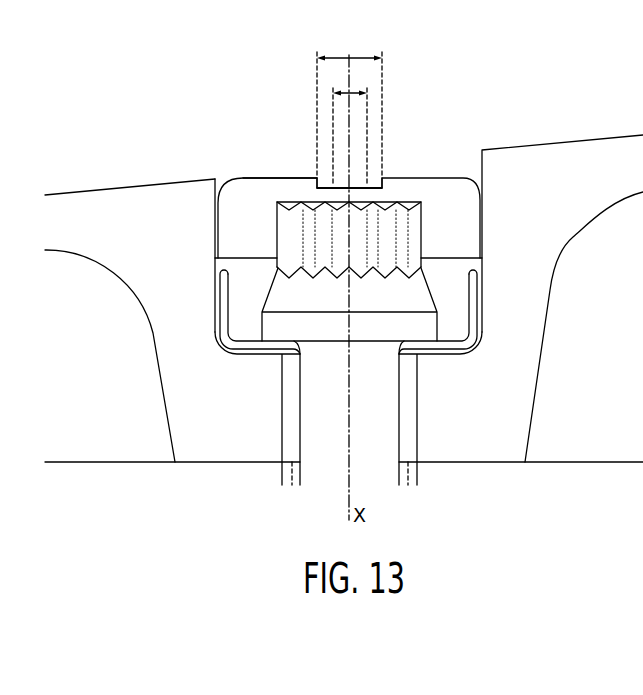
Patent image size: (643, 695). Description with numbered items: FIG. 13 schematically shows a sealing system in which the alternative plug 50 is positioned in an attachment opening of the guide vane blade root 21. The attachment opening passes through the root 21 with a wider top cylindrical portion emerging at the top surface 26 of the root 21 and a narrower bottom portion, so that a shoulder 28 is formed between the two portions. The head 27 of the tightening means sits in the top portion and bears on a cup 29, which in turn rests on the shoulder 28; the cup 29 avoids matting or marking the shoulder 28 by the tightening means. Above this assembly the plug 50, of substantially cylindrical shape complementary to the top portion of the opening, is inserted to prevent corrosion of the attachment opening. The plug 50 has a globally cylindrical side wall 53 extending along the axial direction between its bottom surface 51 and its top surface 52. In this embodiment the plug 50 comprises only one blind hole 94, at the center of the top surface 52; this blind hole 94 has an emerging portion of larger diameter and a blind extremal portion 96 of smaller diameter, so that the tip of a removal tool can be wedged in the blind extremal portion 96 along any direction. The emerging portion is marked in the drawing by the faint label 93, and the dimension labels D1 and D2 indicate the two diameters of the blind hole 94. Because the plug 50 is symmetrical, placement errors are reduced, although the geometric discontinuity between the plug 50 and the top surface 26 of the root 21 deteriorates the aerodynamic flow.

The root 21 is at (567, 172).
The top surface 26 is at (130, 188).
The side wall 53 is at (212, 223).
The shoulder 28 is at (443, 358).
The plug 50 is at (262, 194).
The top surface 52 is at (295, 176).
The opening wall 93 is at (340, 176).
The blind hole 94 is at (358, 168).
The blind extremal portion 96 is at (357, 186).
The first diameter D1 is at (349, 106).
The second diameter D2 is at (350, 129).
The head 27 is at (315, 240).
The bottom surface 51 is at (458, 267).
The cup 29 is at (222, 311).